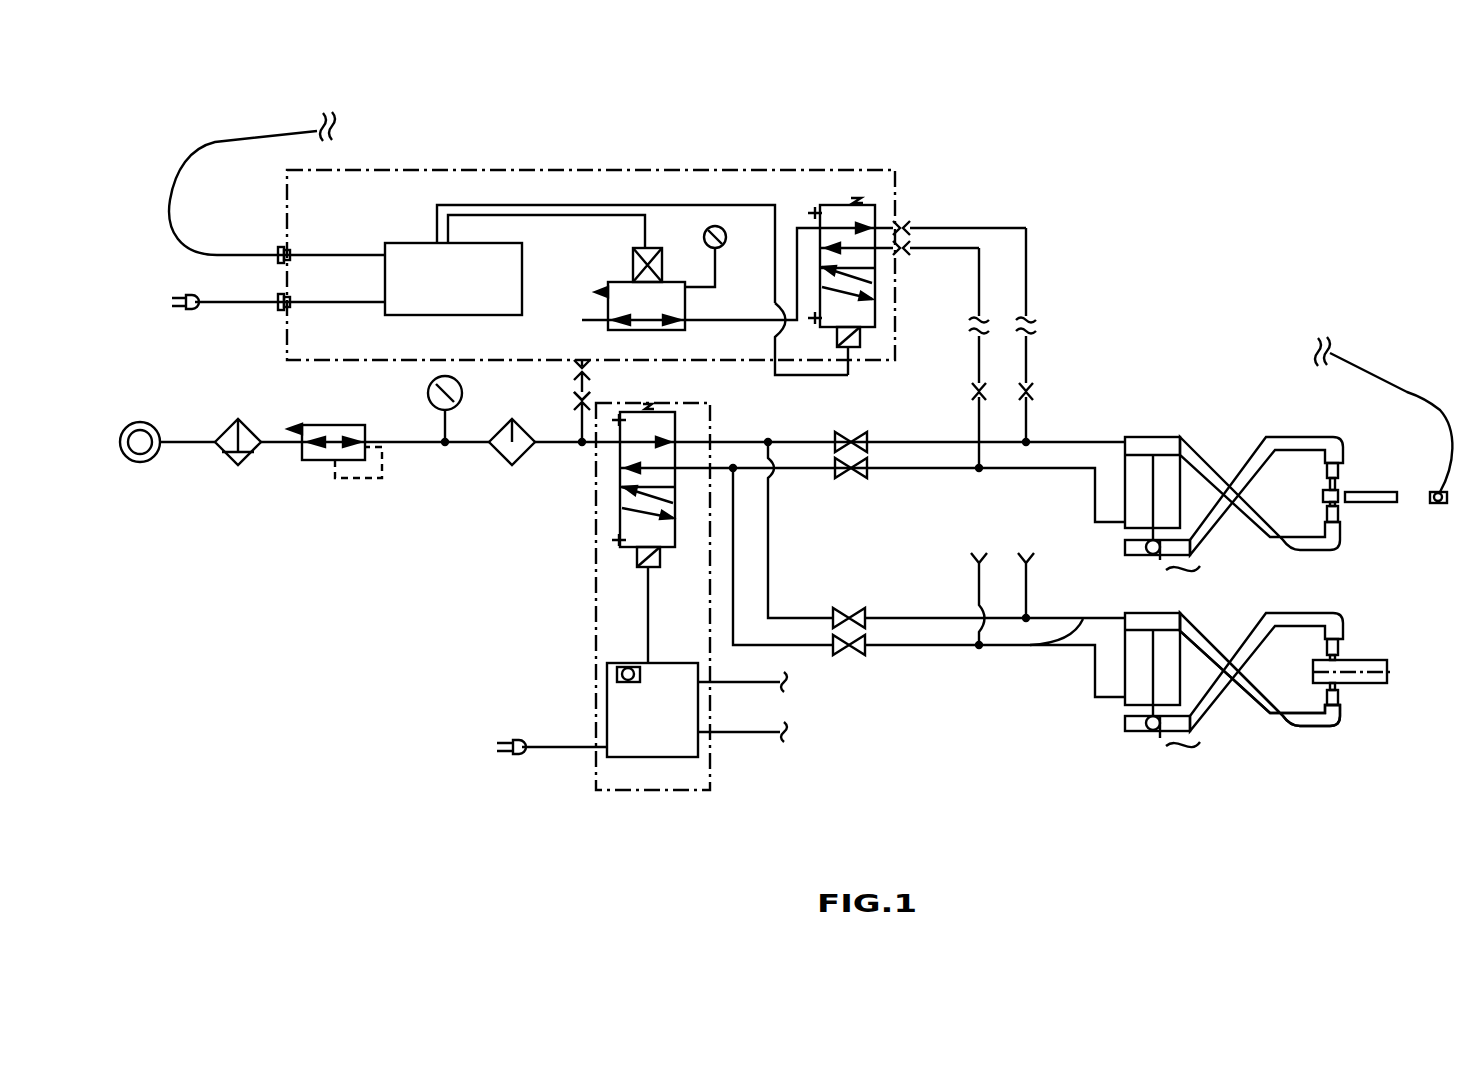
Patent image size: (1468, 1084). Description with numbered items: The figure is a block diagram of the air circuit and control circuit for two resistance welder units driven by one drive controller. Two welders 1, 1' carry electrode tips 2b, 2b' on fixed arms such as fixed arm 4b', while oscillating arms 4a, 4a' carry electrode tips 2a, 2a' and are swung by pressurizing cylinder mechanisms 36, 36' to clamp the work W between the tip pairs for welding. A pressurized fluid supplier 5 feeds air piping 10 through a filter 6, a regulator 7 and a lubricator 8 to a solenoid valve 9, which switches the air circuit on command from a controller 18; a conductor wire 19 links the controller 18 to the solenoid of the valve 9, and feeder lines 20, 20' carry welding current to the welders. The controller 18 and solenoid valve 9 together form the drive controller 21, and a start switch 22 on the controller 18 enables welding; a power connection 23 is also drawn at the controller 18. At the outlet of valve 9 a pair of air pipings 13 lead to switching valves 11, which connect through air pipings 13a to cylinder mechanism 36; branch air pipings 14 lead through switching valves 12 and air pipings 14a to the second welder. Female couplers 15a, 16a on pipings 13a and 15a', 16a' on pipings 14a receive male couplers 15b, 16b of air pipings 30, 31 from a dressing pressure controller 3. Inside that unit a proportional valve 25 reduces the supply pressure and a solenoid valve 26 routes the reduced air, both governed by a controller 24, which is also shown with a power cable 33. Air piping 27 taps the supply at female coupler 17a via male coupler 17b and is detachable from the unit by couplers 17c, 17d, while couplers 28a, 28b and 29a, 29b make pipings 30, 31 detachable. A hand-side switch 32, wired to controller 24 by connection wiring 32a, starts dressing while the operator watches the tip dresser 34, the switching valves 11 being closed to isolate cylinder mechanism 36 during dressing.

The welder 1 is at (1260, 461).
The welder 1' is at (1260, 648).
The electrode tip 2a is at (1359, 477).
The electrode tip 2b is at (1351, 522).
The electrode tip 2a' is at (1365, 640).
The electrode tip 2b' is at (1364, 707).
The dressing pressure controller 3 is at (498, 166).
The oscillating arm 4a is at (1266, 471).
The oscillating arm 4a' is at (1266, 645).
The fixed arm 4b' is at (1260, 698).
The pressurized fluid supplier 5 is at (143, 463).
The filter 6 is at (245, 462).
The regulator 7 is at (318, 460).
The lubricator 8 is at (505, 465).
The solenoid valve 9 is at (618, 462).
The air piping 10 is at (432, 447).
The switching valve 11 is at (850, 432).
The switching valve 12 is at (840, 607).
The air piping 13 is at (766, 438).
The air piping 13a is at (947, 440).
The air piping 14 is at (770, 515).
The air piping 14a is at (1012, 648).
The female coupler 15a is at (1063, 406).
The female coupler 15a' is at (1013, 556).
The male coupler 15b is at (1030, 383).
The female coupler 16a is at (997, 412).
The female coupler 16a' is at (949, 579).
The male coupler 16b is at (975, 383).
The female coupler 17a is at (575, 403).
The male coupler 17b is at (575, 390).
The coupler 17c is at (590, 378).
The coupler 17d is at (576, 366).
The controller 18 is at (652, 760).
The conductor wire 19 is at (652, 612).
The feeder line 20 is at (970, 614).
The feeder line 20' is at (973, 754).
The drive controller 21 is at (590, 550).
The start switch 22 is at (626, 666).
The power connection 23 is at (562, 750).
The controller 24 is at (395, 243).
The proportional valve 25 is at (612, 282).
The solenoid valve 26 is at (823, 205).
The air piping 27 is at (590, 398).
The coupler 28a is at (906, 226).
The coupler 28b is at (902, 222).
The coupler 29a is at (906, 249).
The coupler 29b is at (903, 255).
The air piping 30 is at (1030, 268).
The air piping 31 is at (983, 270).
The hand-side switch 32 is at (1443, 504).
The connection wiring 32a is at (172, 198).
The power cable 33 is at (235, 302).
The tip dresser 34 is at (1395, 503).
The pressurizing cylinder mechanism 36 is at (1157, 466).
The pressurizing cylinder mechanism 36' is at (1139, 644).
The work W is at (1388, 675).